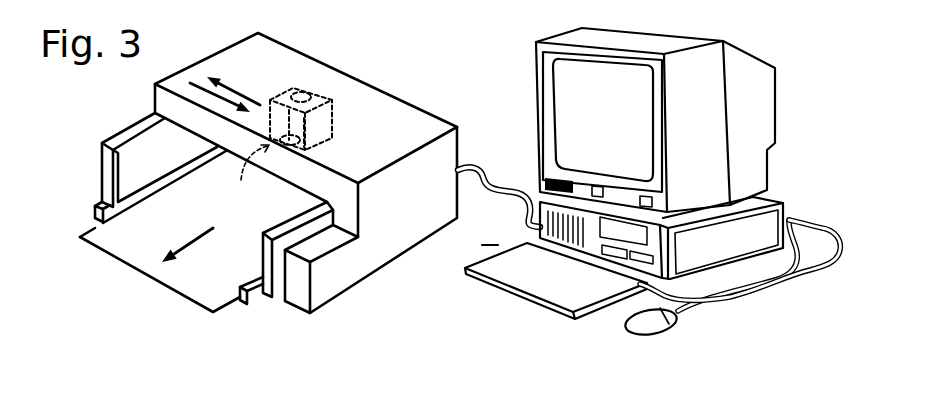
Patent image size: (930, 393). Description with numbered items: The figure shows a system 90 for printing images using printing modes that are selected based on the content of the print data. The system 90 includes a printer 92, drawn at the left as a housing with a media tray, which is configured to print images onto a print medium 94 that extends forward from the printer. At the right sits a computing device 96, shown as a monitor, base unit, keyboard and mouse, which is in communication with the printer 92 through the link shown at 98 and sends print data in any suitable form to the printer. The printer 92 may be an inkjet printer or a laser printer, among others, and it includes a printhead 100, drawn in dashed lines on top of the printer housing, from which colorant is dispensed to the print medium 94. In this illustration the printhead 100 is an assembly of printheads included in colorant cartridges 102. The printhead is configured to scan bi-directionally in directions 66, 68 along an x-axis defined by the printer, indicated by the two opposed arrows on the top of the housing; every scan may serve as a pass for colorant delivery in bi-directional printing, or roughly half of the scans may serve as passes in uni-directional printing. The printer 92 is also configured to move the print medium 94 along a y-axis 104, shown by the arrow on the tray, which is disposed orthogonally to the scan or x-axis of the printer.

The scan direction 66 is at (197, 86).
The scan direction 68 is at (241, 90).
The system 90 is at (239, 167).
The printer 92 is at (129, 111).
The print medium 94 is at (130, 250).
The computing device 96 is at (509, 78).
The communication 98 is at (508, 190).
The printhead 100 is at (244, 176).
The colorant cartridges 102 is at (333, 101).
The y-axis 104 is at (190, 243).